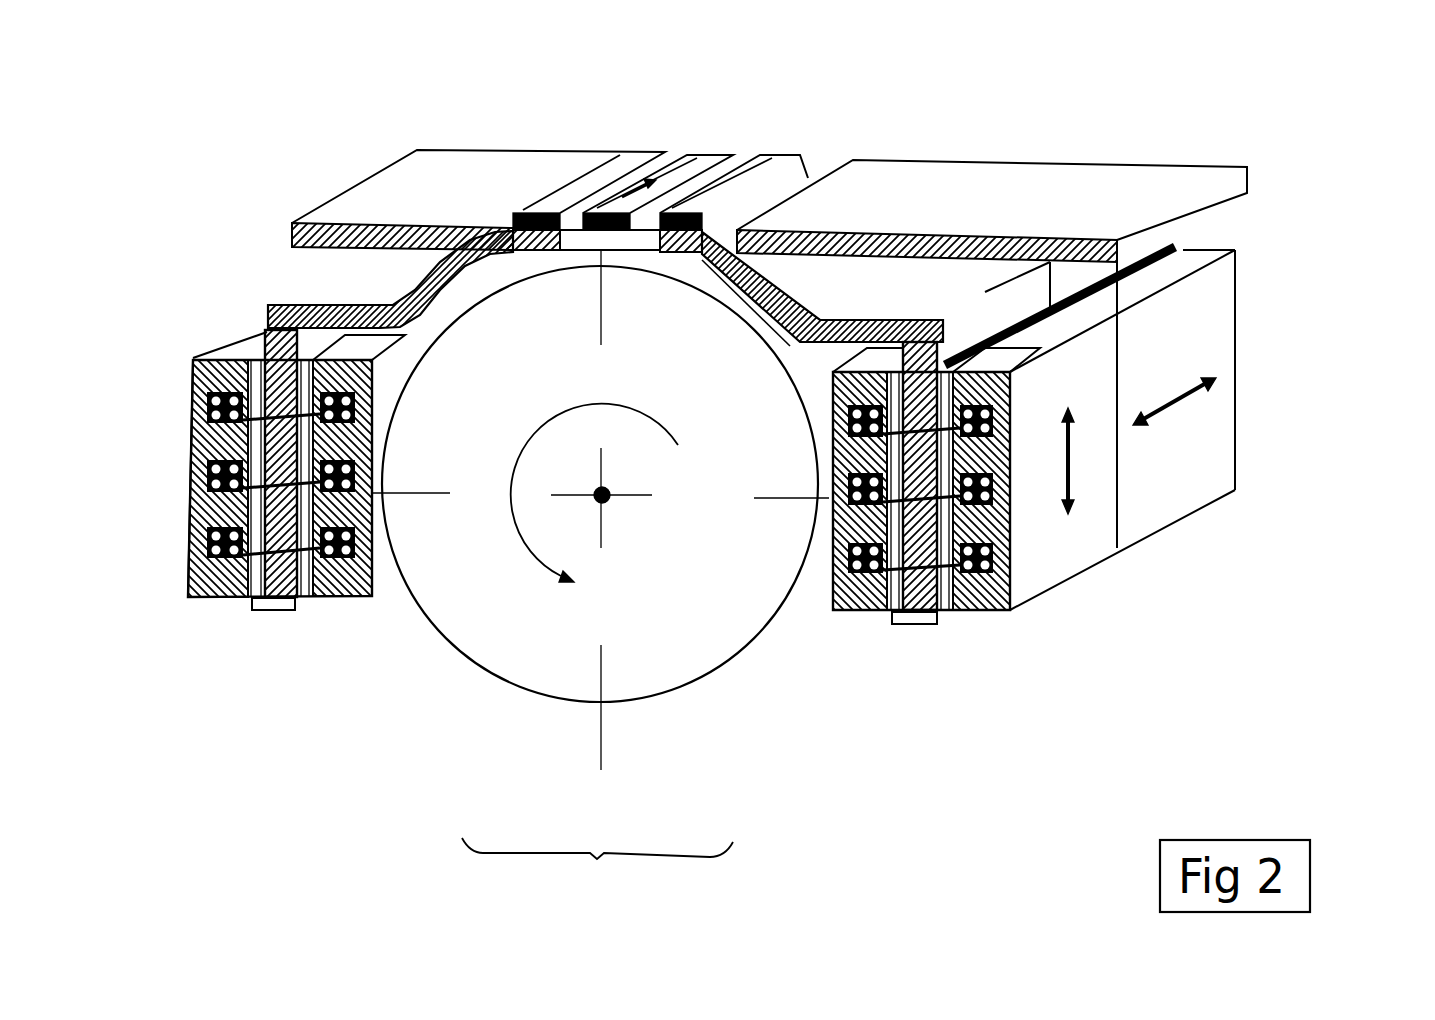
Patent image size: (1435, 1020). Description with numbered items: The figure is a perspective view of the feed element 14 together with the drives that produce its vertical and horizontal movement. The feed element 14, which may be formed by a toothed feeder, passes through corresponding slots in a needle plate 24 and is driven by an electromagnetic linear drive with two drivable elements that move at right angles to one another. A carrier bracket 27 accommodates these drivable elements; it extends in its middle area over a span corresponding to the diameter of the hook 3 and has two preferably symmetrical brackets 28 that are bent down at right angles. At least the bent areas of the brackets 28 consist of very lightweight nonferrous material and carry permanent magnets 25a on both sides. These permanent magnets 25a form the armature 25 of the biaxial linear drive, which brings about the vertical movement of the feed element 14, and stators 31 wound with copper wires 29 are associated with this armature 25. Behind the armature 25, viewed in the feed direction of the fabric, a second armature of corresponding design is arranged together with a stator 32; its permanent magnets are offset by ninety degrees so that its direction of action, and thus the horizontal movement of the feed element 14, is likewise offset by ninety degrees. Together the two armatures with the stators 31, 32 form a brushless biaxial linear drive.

The hook 3 is at (601, 499).
The feed element 14 is at (527, 213).
The needle plate 24 is at (523, 170).
The armature 25 is at (597, 880).
The permanent magnets 25a is at (275, 612).
The carrier bracket 27 is at (420, 273).
The brackets 28 is at (270, 308).
The copper wires 29 is at (215, 470).
The stators 31 is at (193, 357).
The stator 32 is at (1165, 430).